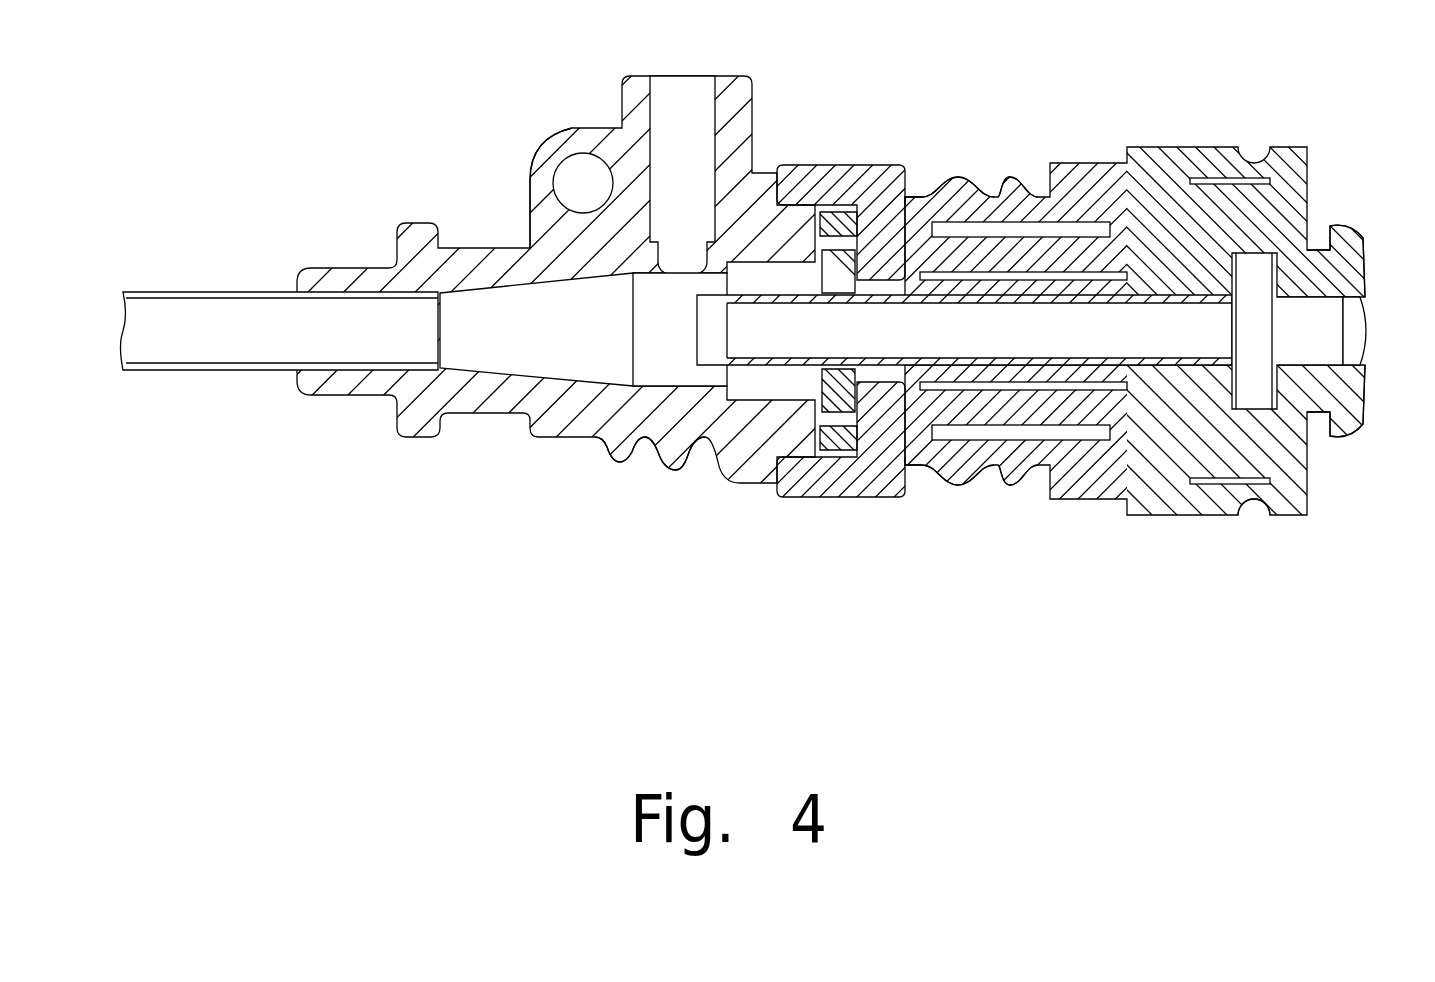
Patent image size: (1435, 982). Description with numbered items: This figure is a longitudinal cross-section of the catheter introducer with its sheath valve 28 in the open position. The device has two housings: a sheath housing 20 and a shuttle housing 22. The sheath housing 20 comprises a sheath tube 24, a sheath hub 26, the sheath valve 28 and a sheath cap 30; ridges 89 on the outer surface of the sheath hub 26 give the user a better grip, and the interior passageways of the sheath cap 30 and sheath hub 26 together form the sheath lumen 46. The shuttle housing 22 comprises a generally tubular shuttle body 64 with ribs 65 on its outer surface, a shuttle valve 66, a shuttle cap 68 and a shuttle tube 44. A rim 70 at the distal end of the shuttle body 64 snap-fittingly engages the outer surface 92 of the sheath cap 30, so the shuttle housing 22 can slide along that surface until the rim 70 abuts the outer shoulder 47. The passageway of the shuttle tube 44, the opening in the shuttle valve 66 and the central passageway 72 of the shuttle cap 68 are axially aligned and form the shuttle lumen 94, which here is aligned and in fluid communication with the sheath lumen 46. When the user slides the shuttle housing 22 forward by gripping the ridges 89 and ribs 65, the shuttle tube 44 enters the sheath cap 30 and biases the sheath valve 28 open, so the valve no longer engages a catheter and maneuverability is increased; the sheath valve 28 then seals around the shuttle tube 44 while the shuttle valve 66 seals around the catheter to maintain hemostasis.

The sheath housing 20 is at (458, 502).
The shuttle housing 22 is at (1060, 547).
The sheath tube 24 is at (214, 374).
The sheath hub 26 is at (526, 216).
The sheath valve 28 is at (815, 232).
The sheath cap 30 is at (812, 500).
The shuttle tube 44 is at (1094, 388).
The sheath lumen 46 is at (528, 345).
The outer shoulder 47 is at (906, 486).
The shuttle body 64 is at (1072, 158).
The ribs 65 is at (958, 176).
The shuttle valve 66 is at (1212, 434).
The shuttle cap 68 is at (1297, 145).
The rim 70 is at (917, 214).
The central passageway 72 is at (1326, 331).
The ridges 89 is at (628, 465).
The outer surface 92 is at (996, 432).
The shuttle lumen 94 is at (1052, 344).